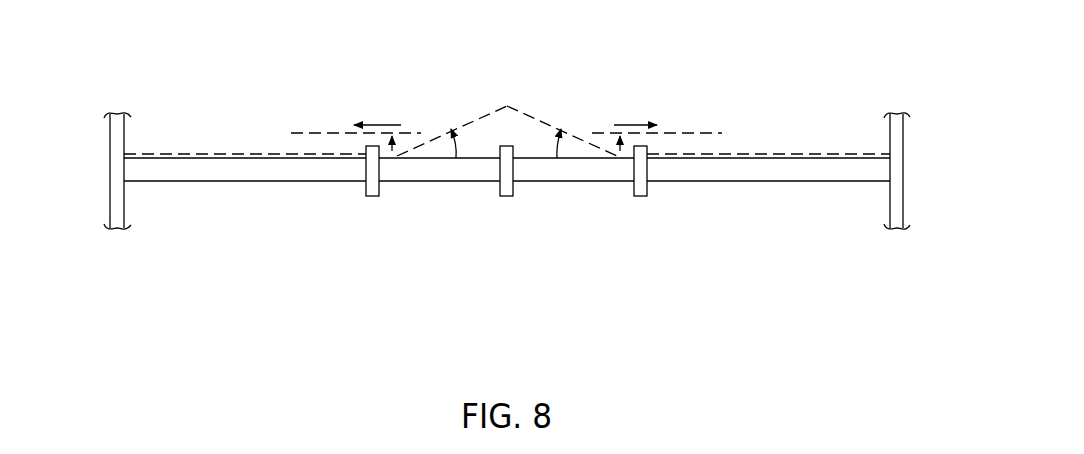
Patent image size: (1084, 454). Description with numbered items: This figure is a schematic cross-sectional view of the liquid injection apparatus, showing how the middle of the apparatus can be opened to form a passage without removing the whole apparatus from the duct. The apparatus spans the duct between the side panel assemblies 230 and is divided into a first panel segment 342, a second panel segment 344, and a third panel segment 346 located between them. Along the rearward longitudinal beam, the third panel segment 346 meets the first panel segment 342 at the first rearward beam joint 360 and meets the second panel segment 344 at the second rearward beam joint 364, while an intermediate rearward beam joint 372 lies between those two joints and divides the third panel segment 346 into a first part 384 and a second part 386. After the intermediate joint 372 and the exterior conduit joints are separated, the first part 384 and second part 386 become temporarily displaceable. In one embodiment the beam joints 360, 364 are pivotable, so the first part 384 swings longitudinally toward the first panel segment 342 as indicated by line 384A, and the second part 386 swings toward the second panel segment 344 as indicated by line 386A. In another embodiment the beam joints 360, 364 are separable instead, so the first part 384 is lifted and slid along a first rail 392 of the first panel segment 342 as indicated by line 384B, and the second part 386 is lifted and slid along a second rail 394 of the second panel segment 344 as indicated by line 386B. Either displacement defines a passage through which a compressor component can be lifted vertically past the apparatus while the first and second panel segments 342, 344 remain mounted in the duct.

The side panel assemblies 230 is at (106, 180).
The first panel segment 342 is at (253, 267).
The second panel segment 344 is at (767, 277).
The third panel segment 346 is at (522, 285).
The first rearward beam joint 360 is at (363, 196).
The second rearward beam joint 364 is at (641, 196).
The intermediate rearward beam joint 372 is at (500, 196).
The third panel segment first part 384 is at (443, 212).
The line 384A is at (477, 116).
The line 384B is at (316, 131).
The third panel segment second part 386 is at (572, 215).
The line 386A is at (530, 117).
The line 386B is at (673, 131).
The first rail 392 is at (218, 152).
The second rail 394 is at (807, 152).